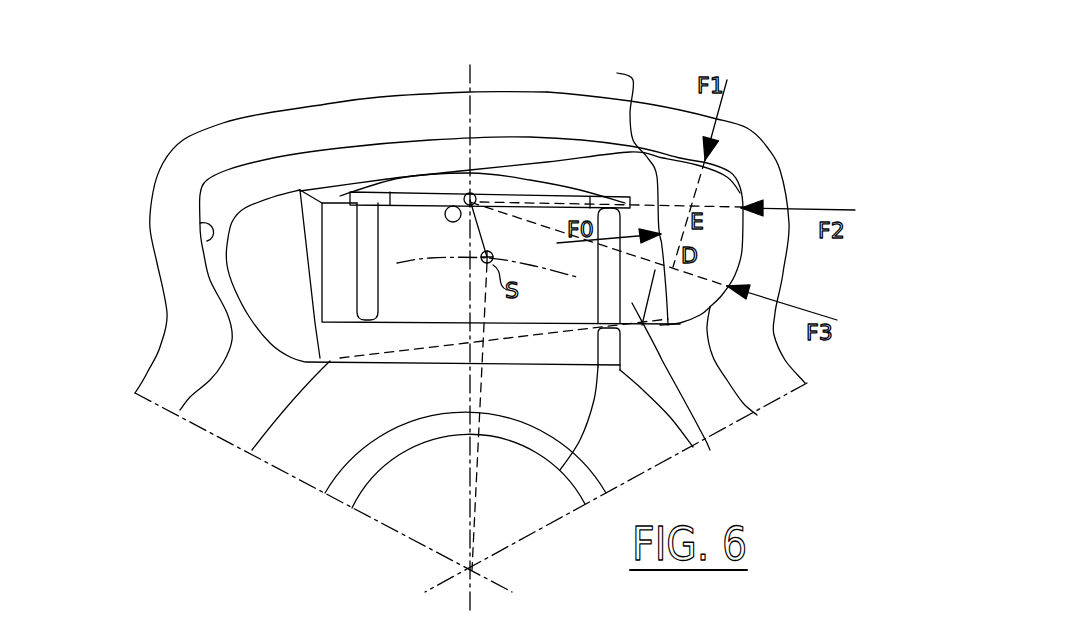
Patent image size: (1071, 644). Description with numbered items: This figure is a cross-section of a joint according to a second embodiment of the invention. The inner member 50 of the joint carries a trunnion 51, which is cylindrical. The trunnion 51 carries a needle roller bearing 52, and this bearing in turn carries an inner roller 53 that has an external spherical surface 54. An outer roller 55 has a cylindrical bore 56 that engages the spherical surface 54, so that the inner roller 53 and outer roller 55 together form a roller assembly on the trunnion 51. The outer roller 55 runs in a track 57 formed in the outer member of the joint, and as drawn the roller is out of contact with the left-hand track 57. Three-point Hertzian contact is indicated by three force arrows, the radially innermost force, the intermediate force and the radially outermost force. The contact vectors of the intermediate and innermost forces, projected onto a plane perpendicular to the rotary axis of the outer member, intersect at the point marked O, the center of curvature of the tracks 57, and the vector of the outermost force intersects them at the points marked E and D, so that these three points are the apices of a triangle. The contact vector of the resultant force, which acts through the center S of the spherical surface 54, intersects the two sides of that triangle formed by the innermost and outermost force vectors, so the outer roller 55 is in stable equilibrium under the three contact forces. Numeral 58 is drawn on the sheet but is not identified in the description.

The inner member 50 is at (303, 440).
The trunnion 51 is at (412, 228).
The needle roller bearing 52 is at (560, 470).
The inner roller 53 is at (710, 450).
The external spherical surface 54 is at (757, 418).
The outer roller 55 is at (700, 197).
The cylindrical bore 56 is at (627, 195).
The track 57 is at (200, 223).
The rim 58 is at (805, 383).